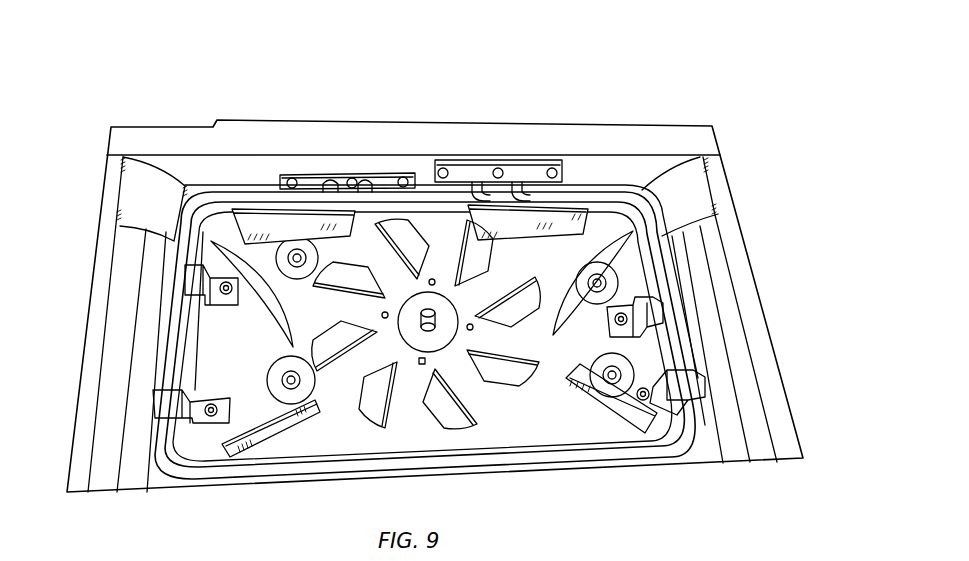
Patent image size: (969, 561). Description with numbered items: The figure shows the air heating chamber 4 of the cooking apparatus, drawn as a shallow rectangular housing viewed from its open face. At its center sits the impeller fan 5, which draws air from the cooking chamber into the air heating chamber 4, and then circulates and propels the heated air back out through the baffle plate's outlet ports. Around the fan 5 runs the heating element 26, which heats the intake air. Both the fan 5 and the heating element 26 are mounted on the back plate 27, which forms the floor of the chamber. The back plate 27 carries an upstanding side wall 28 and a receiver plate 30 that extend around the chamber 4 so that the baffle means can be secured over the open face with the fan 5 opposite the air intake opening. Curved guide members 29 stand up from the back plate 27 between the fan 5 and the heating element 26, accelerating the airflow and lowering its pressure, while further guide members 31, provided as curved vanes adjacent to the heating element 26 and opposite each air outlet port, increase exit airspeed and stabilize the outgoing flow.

The air heating chamber 4 is at (590, 83).
The impeller fan 5 is at (497, 410).
The heating element 26 is at (666, 278).
The back plate 27 is at (602, 424).
The upstanding side wall 28 is at (200, 166).
The guide members 29 is at (549, 221).
The receiver plate 30 is at (343, 133).
The further guide members 31 is at (136, 185).